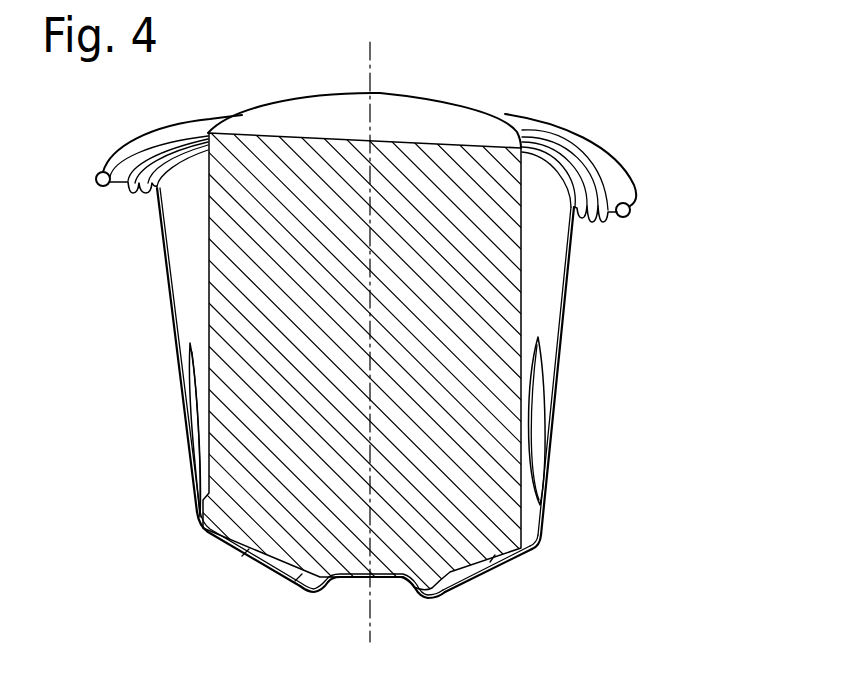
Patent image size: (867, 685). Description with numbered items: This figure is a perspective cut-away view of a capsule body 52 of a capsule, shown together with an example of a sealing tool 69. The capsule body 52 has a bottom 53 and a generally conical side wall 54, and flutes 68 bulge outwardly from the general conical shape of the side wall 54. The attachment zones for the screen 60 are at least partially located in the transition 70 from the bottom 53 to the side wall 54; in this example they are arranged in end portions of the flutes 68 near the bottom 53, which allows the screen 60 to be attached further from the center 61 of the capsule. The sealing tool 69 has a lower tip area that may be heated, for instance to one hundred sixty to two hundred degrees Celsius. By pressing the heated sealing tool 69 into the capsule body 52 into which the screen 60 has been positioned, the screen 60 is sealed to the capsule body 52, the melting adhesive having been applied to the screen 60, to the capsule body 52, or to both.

The capsule body 52 is at (658, 152).
The bottom 53 is at (423, 600).
The side wall 54 is at (565, 325).
The screen 60 is at (452, 584).
The center 61 is at (368, 610).
The flutes 68 is at (198, 418).
The sealing tool 69 is at (468, 115).
The transition 70 is at (540, 538).